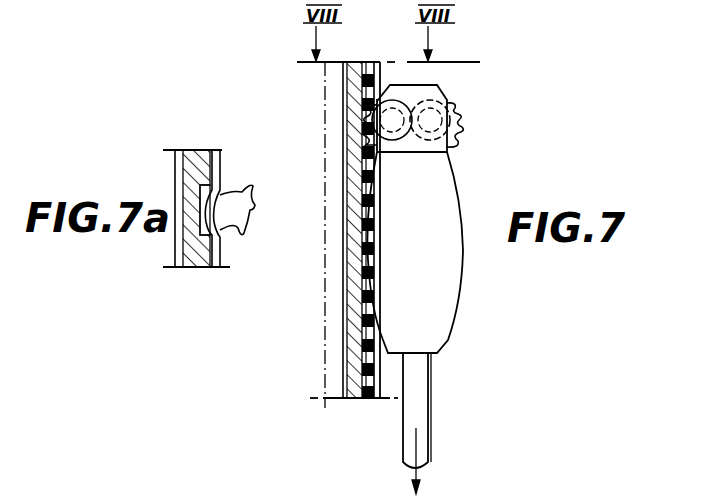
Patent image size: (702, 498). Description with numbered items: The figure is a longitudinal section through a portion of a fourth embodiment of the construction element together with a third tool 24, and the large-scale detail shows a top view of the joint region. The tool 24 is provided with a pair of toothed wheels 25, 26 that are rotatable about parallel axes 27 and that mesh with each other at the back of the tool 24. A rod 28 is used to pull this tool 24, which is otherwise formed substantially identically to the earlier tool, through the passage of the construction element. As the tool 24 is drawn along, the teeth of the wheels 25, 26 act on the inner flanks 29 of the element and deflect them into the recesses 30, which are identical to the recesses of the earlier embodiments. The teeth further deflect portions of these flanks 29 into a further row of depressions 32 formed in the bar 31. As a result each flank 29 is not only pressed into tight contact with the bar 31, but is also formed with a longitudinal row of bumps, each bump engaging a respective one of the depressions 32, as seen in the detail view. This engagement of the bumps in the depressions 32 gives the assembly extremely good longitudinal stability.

In FIG. 7, the tool 24 is at (463, 270).
In FIG. 7, the toothed wheel 25 is at (463, 125).
In FIG. 7, the toothed wheel 26 is at (362, 125).
In FIG. 7a, the toothed wheel 26 is at (233, 217).
In FIG. 7, the parallel axes 27 is at (390, 127).
In FIG. 7, the rod 28 is at (415, 450).
In FIG. 7, the inner flank 29 is at (350, 265).
In FIG. 7a, the inner flank 29 is at (213, 180).
In FIG. 7, the recess 30 is at (362, 355).
In FIG. 7, the bar 31 is at (357, 370).
In FIG. 7a, the bar 31 is at (216, 118).
In FIG. 7, the depression 32 is at (360, 322).
In FIG. 7a, the depression 32 is at (177, 220).